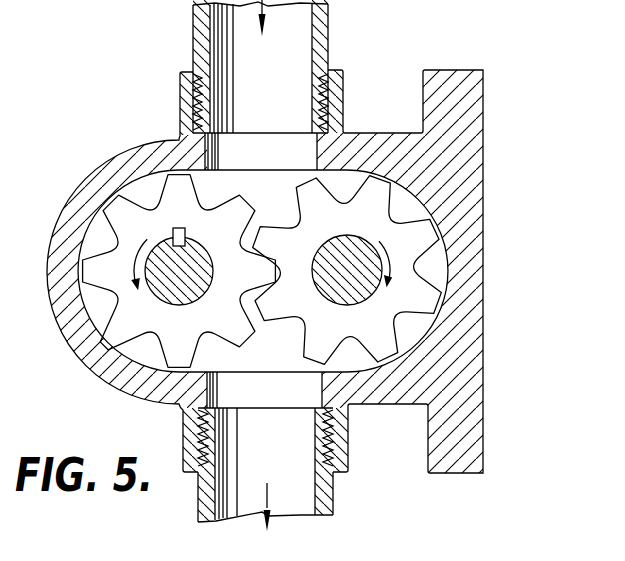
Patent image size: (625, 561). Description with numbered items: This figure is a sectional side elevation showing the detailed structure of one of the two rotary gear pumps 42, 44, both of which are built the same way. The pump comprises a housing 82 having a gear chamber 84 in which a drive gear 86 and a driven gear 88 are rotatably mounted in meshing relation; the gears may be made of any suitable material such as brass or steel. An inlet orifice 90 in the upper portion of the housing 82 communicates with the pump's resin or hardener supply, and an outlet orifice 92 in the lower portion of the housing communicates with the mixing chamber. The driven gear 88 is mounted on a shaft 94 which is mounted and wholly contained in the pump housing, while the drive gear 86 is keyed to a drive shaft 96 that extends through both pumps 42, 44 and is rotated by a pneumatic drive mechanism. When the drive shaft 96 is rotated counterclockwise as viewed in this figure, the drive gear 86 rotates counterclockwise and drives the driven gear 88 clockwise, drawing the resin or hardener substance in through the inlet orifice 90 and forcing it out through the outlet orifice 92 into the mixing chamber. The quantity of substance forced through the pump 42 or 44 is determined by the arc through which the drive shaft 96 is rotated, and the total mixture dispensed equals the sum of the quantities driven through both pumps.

The rotary gear pump 42 is at (243, 265).
The rotary gear pump 44 is at (114, 146).
The housing 82 is at (115, 377).
The gear chamber 84 is at (212, 356).
The drive gear 86 is at (120, 277).
The driven gear 88 is at (343, 212).
The inlet orifice 90 is at (218, 157).
The outlet orifice 92 is at (305, 395).
The shaft 94 is at (342, 275).
The drive shaft 96 is at (160, 282).